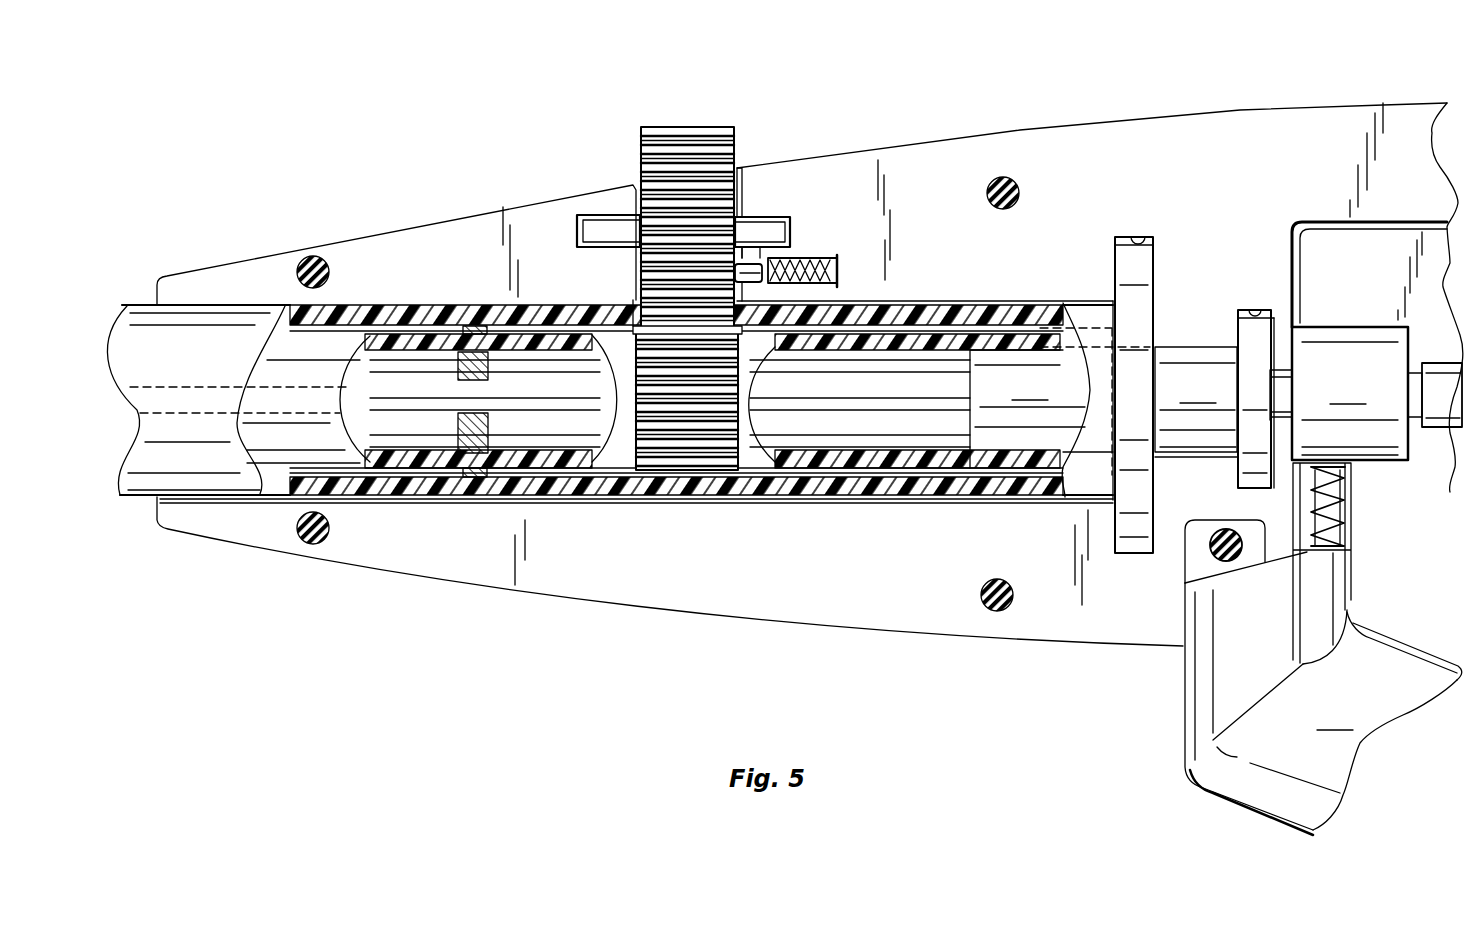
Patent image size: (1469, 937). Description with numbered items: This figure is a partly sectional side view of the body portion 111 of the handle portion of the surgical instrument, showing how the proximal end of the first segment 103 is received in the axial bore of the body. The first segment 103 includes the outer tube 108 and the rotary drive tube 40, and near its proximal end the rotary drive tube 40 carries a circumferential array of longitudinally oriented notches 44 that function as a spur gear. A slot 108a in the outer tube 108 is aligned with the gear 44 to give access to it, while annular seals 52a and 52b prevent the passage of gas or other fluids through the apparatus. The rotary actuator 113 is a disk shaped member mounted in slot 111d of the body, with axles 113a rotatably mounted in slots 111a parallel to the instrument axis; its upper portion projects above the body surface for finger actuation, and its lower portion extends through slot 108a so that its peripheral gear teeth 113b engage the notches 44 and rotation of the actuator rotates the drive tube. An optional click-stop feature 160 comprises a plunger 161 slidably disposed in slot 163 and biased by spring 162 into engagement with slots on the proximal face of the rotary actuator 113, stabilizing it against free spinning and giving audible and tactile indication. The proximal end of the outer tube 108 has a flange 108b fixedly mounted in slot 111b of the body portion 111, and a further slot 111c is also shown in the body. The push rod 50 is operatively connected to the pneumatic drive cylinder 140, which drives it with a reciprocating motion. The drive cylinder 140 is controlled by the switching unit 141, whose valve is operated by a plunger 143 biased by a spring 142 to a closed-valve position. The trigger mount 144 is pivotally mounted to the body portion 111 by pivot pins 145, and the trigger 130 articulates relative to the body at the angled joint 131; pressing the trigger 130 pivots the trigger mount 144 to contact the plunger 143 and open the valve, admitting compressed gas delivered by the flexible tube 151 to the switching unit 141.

The rotary drive tube 40 is at (312, 368).
The notches 44 is at (686, 437).
The push rod 50 is at (887, 398).
The annular seal 52a is at (466, 330).
The annular seal 52b is at (449, 372).
The first segment 103 is at (131, 505).
The outer tube 108 is at (195, 348).
The slot 108a is at (636, 303).
The flange 108b is at (1128, 277).
The body portion 111 is at (1197, 108).
The slots 111a is at (777, 222).
The slot 111b is at (1140, 237).
The housing wall 111c is at (1250, 311).
The slot 111d is at (638, 187).
The rotary actuator 113 is at (719, 95).
The axles 113a is at (742, 232).
The gear teeth 113b is at (679, 143).
The trigger 130 is at (1335, 747).
The angled joint 131 is at (1370, 640).
The drive cylinder 140 is at (1131, 400).
The switching unit 141 is at (1369, 341).
The spring 142 is at (1340, 513).
The plunger 143 is at (1342, 548).
The trigger mount 144 is at (1232, 660).
The pivot pins 145 is at (1210, 543).
The flexible tube 151 is at (1450, 455).
The click-stop feature 160 is at (848, 243).
The plunger 161 is at (752, 268).
The spring 162 is at (800, 260).
The slot 163 is at (835, 260).